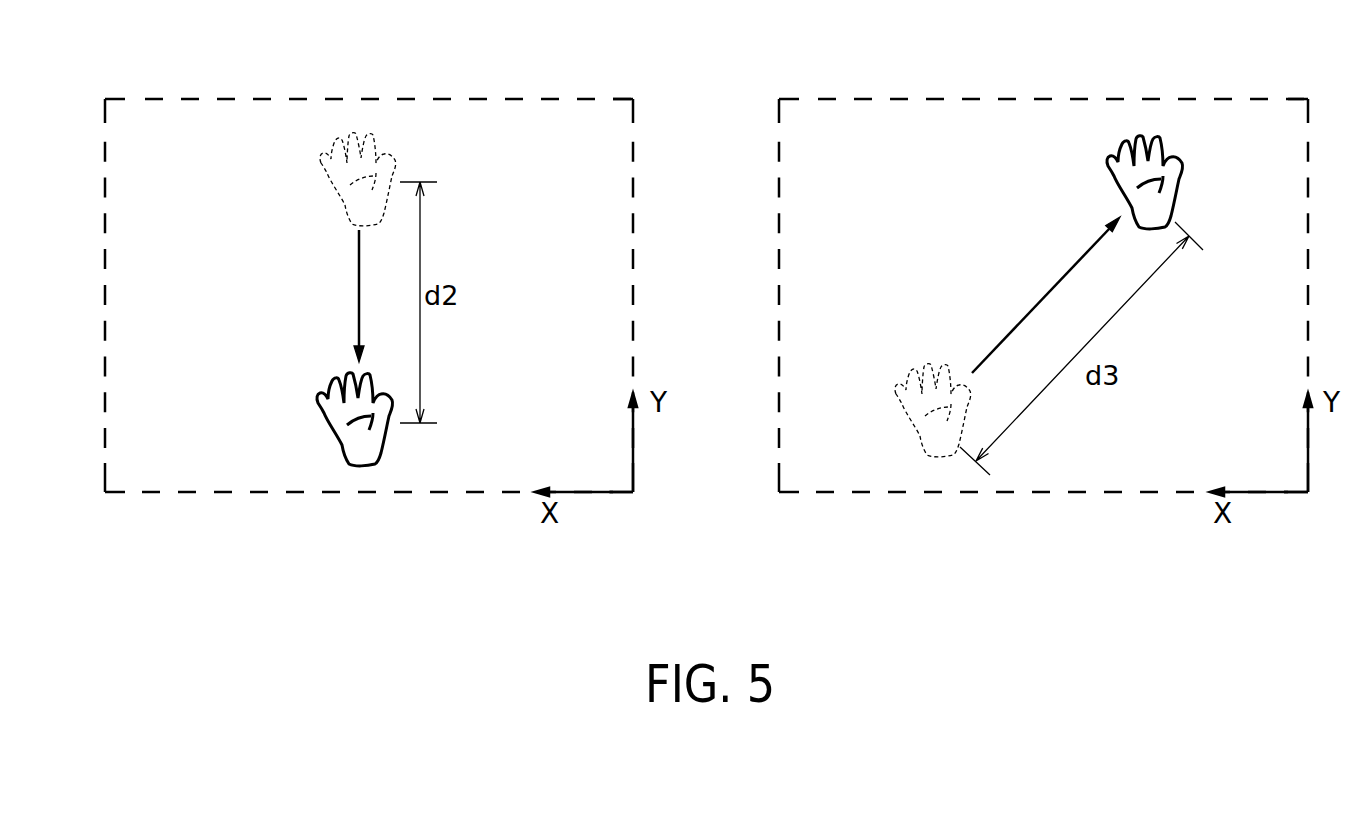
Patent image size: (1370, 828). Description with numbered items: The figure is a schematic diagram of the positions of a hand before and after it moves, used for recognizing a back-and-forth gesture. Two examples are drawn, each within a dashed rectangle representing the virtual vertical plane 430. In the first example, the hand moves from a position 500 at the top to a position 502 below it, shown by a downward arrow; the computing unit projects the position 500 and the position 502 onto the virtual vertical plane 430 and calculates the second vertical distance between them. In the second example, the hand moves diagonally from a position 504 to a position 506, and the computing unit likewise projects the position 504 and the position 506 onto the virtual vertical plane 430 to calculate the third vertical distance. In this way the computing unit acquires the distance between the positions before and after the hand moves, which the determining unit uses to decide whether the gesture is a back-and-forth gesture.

The virtual vertical plane 430 is at (363, 99).
The position 500 is at (320, 178).
The position 502 is at (318, 414).
The position 504 is at (920, 363).
The position 506 is at (1108, 181).